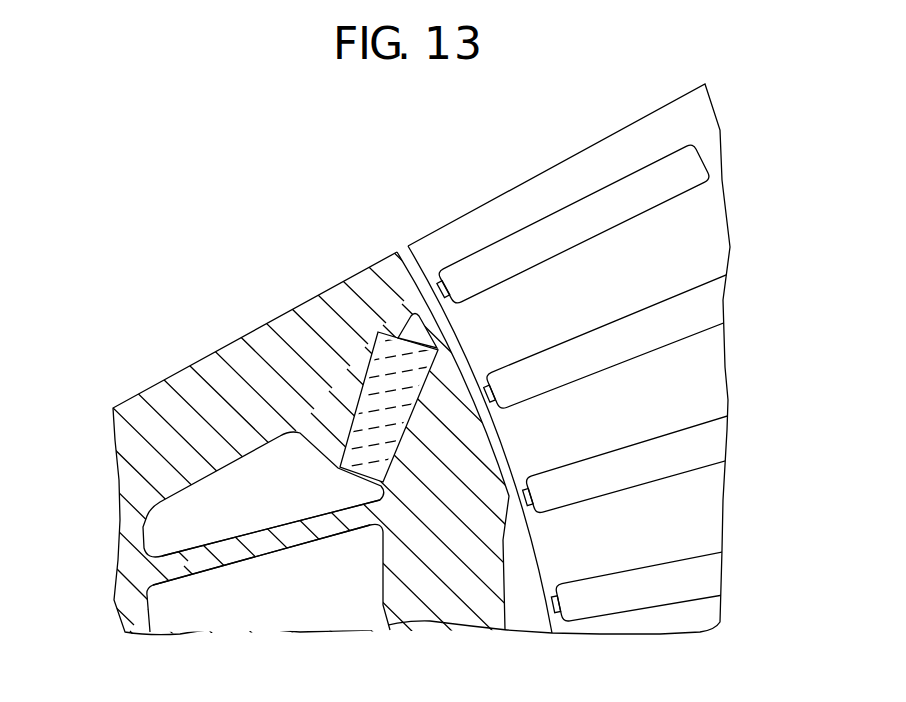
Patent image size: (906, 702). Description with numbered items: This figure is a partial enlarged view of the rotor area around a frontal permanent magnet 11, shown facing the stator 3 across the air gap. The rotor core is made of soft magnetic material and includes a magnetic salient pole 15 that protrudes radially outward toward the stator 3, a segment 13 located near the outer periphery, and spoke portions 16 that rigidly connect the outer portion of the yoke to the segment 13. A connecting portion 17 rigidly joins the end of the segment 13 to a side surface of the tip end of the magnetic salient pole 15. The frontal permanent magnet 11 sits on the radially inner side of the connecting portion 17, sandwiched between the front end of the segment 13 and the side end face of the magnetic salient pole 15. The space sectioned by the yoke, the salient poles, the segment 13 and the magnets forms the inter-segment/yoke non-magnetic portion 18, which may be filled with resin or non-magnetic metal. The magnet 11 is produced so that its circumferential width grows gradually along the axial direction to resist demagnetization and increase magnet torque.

The stator 3 is at (633, 378).
The frontal permanent magnet 11 is at (387, 377).
The segment 13 is at (448, 608).
The magnetic salient pole 15 is at (301, 457).
The spoke portion 16 is at (233, 548).
The connecting portion 17 is at (447, 306).
The inter-segment/yoke non-magnetic portion 18 is at (170, 610).